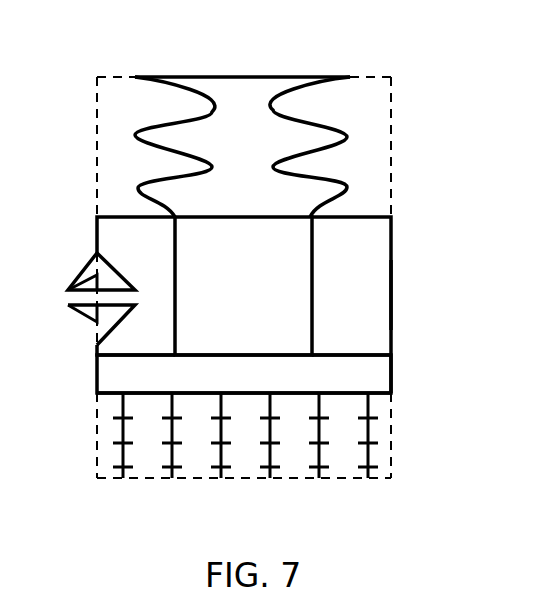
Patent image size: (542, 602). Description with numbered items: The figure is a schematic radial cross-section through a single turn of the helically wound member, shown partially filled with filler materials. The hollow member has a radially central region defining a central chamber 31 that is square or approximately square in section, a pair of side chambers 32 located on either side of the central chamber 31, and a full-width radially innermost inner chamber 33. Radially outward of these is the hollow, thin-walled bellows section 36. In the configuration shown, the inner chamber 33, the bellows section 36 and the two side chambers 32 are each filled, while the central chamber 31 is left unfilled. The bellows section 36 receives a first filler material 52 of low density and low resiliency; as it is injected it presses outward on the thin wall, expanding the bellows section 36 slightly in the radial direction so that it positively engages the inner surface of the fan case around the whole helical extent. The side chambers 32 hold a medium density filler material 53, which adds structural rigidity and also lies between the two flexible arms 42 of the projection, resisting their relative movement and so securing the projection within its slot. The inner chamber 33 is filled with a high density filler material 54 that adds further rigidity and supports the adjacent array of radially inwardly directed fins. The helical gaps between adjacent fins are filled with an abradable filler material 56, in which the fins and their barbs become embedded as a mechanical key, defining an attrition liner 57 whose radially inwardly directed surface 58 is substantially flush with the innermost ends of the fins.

The central chamber 31 is at (257, 298).
The side chambers 32 is at (120, 238).
The inner chamber 33 is at (373, 365).
The bellows section 36 is at (318, 135).
The flexible arms 42 is at (100, 292).
The first filler material 52 is at (251, 98).
The medium density filler material 53 is at (133, 330).
The high density filler material 54 is at (357, 380).
The abradable filler material 56 is at (340, 463).
The attrition liner 57 is at (190, 472).
The radially inwardly directed surface 58 is at (255, 478).